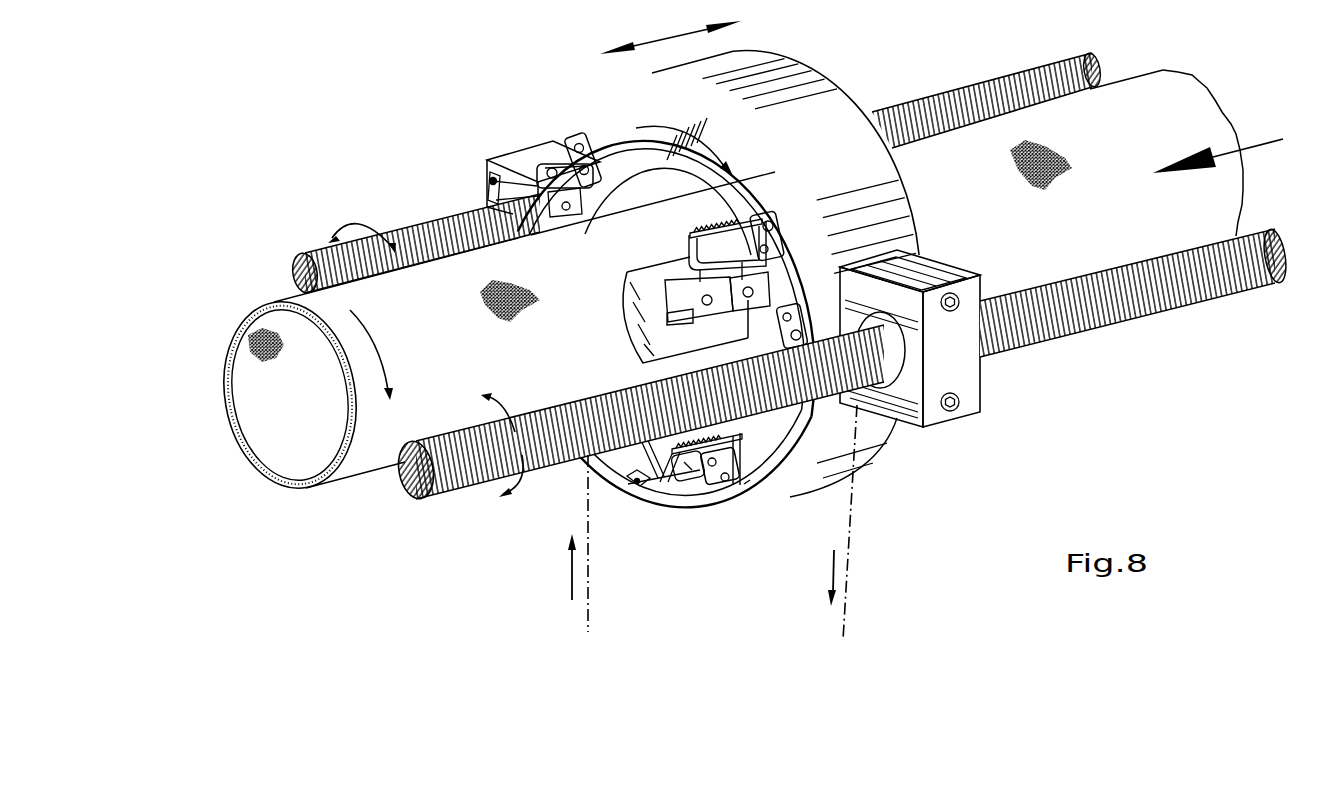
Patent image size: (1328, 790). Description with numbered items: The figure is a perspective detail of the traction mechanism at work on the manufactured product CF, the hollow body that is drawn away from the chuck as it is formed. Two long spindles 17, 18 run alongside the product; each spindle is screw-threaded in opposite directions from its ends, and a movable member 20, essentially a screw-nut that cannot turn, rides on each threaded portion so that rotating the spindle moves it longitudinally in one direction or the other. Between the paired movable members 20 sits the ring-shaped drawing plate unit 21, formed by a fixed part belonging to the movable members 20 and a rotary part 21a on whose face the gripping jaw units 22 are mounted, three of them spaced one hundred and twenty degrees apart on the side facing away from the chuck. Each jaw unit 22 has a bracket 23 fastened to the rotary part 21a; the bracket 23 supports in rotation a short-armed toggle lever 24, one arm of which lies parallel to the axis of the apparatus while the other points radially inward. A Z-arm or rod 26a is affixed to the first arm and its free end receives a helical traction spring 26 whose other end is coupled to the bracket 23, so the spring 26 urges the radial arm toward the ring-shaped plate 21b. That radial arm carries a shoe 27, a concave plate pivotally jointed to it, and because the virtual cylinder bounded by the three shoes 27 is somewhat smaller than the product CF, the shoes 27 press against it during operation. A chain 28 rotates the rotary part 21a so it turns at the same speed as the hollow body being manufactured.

The manufactured product CF is at (253, 307).
The spindle 17 is at (960, 80).
The spindle 18 is at (1118, 319).
The movable member 20 is at (540, 160).
The ring-shaped drawing plate unit 21 is at (810, 62).
The rotary part of the ring-shaped plate unit 21a is at (710, 503).
The ring-shaped plate 21b is at (750, 480).
The gripping jaw unit 22 is at (590, 190).
The bracket 23 is at (575, 150).
The toggle lever 24 is at (489, 182).
The helical traction spring 26 is at (728, 216).
The Z-arm or rod 26a is at (714, 228).
The shoe 27 is at (643, 280).
The chain 28 is at (592, 577).